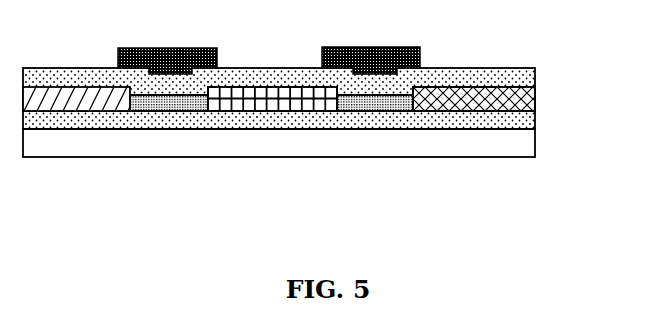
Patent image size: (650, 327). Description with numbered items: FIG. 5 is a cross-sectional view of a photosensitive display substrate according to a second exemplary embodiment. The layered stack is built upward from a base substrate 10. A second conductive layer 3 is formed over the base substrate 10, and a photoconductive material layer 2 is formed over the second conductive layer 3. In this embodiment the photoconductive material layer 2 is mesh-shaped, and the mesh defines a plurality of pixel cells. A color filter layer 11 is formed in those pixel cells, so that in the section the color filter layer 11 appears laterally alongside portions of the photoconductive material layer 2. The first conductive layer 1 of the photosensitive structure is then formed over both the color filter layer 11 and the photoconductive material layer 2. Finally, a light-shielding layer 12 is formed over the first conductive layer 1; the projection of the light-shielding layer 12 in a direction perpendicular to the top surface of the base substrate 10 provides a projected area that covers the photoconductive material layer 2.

The first conductive layer 1 is at (518, 78).
The photoconductive material layer 2 is at (367, 102).
The second conductive layer 3 is at (518, 122).
The base substrate 10 is at (518, 145).
The color filter layer 11 is at (470, 105).
The light-shielding layer 12 is at (213, 48).